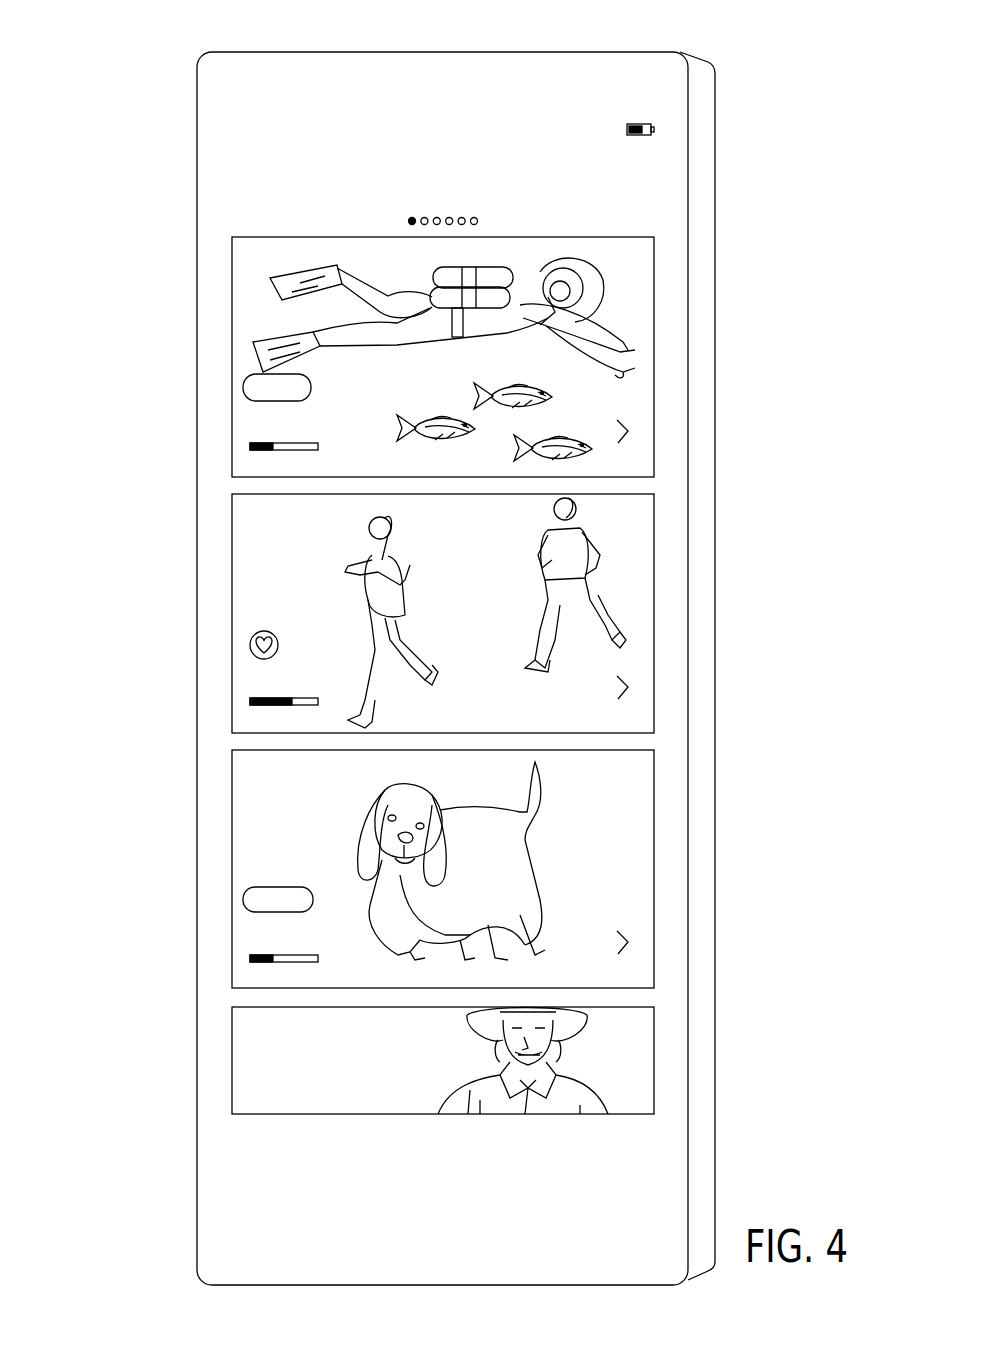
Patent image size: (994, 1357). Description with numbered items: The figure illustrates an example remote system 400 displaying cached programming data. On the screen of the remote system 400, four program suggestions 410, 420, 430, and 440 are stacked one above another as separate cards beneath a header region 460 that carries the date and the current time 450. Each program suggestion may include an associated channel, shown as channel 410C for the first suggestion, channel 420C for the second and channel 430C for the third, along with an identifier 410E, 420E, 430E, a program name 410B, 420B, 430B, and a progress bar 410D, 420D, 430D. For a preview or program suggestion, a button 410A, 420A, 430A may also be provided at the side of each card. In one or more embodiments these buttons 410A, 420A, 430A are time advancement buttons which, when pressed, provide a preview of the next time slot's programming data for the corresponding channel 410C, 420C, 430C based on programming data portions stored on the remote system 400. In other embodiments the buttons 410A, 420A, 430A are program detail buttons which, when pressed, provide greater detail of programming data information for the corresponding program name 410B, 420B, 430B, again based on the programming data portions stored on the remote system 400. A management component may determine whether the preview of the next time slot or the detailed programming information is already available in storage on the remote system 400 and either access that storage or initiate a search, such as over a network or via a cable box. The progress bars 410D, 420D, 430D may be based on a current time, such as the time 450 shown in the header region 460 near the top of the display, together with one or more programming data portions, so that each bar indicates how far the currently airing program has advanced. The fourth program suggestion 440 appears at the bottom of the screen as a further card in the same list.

The remote system 400 is at (170, 30).
The program suggestion 410 is at (138, 237).
The button 410A is at (625, 430).
The program name 410B is at (246, 419).
The channel 410C is at (247, 270).
The progress bar 410D is at (250, 447).
The identifier 410E is at (244, 386).
The program suggestion 420 is at (138, 494).
The button 420A is at (625, 686).
The program name 420B is at (246, 674).
The channel 420C is at (247, 525).
The progress bar 420D is at (250, 702).
The identifier 420E is at (252, 640).
The program suggestion 430 is at (138, 750).
The button 430A is at (625, 941).
The program name 430B is at (246, 930).
The channel 430C is at (247, 780).
The progress bar 430D is at (250, 959).
The identifier 430E is at (244, 897).
The program suggestion 440 is at (138, 1007).
The time 450 is at (637, 123).
The time and date header 460 is at (495, 127).